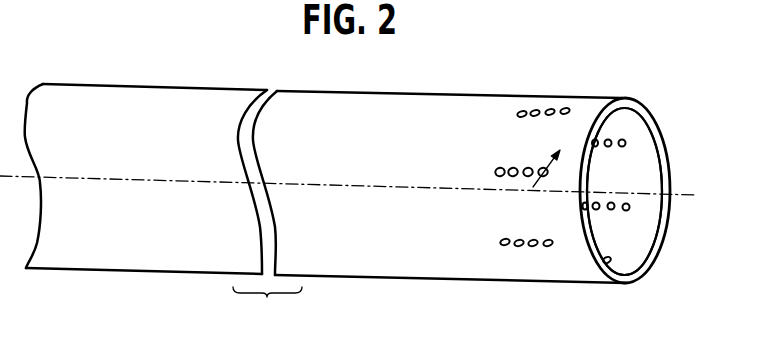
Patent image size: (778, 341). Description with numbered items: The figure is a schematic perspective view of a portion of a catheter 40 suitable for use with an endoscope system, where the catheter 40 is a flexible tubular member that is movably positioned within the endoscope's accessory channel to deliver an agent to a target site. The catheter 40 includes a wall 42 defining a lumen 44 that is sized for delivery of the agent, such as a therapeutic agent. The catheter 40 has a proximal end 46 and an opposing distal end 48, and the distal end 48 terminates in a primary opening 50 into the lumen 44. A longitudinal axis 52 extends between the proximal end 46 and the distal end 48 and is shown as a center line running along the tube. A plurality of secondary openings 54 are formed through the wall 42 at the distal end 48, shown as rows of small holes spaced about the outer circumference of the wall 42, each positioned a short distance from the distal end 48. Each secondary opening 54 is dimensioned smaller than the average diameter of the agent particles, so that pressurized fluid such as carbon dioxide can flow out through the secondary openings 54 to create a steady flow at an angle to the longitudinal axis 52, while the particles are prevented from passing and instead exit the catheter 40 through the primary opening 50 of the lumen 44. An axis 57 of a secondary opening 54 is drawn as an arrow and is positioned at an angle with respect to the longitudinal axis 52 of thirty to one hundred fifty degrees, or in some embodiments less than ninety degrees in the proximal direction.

The catheter 40 is at (441, 68).
The wall 42 is at (303, 97).
The lumen 44 is at (638, 241).
The proximal end 46 is at (198, 95).
The distal end 48 is at (592, 90).
The primary opening 50 is at (645, 160).
The longitudinal axis 52 is at (682, 192).
The secondary openings 54 is at (503, 222).
The axis of secondary opening 57 is at (548, 167).